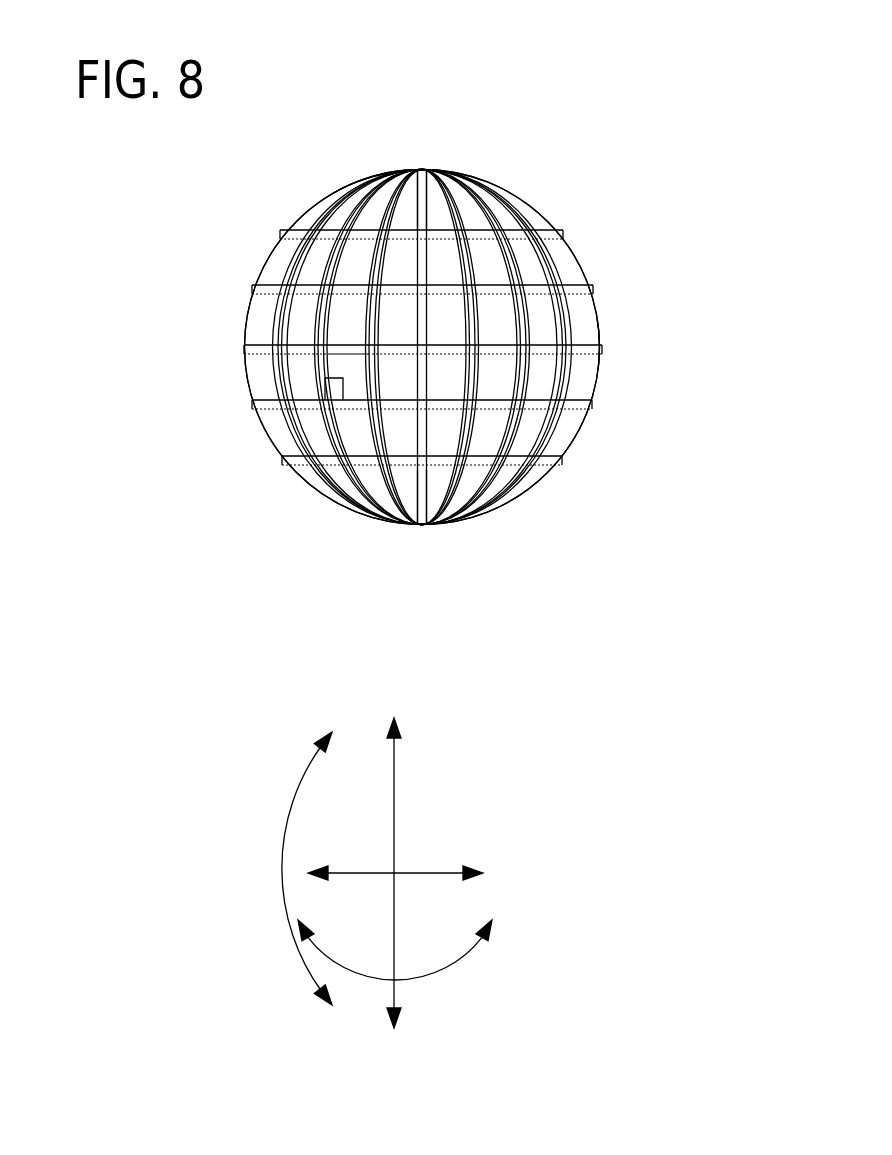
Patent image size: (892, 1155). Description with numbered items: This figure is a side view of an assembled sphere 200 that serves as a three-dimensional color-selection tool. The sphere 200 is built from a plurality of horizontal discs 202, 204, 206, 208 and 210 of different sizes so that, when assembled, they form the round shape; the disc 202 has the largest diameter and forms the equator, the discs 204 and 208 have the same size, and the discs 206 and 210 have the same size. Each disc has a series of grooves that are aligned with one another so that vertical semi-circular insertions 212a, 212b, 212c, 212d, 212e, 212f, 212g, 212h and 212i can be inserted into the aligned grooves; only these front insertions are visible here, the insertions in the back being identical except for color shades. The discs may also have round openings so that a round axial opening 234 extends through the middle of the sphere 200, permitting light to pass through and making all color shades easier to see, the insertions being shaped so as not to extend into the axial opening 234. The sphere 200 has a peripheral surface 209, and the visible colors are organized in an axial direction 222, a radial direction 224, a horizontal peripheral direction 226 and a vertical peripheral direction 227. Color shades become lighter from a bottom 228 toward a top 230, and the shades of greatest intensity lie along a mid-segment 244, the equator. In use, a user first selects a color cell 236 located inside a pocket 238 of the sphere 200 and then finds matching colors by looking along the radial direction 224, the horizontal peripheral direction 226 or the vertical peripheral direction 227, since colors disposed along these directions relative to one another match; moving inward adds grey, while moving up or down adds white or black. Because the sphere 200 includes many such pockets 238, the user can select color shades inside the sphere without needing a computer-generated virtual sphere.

The sphere 200 is at (556, 165).
The horizontal disc 202 is at (245, 345).
The horizontal disc 204 is at (256, 288).
The horizontal disc 206 is at (283, 232).
The horizontal disc 208 is at (253, 402).
The horizontal disc 210 is at (283, 456).
The peripheral surface 209 is at (393, 181).
The vertical semi-circular insertion 212a is at (424, 492).
The vertical semi-circular insertion 212b is at (392, 520).
The vertical semi-circular insertion 212c is at (348, 505).
The vertical semi-circular insertion 212d is at (325, 487).
The vertical semi-circular insertion 212e is at (298, 478).
The vertical semi-circular insertion 212f is at (462, 510).
The vertical semi-circular insertion 212g is at (500, 505).
The vertical semi-circular insertion 212h is at (523, 488).
The vertical semi-circular insertion 212i is at (583, 425).
The axial direction 222 is at (395, 777).
The radial direction 224 is at (435, 873).
The horizontal peripheral direction 226 is at (440, 966).
The vertical peripheral direction 227 is at (295, 795).
The bottom 228 is at (423, 490).
The top 230 is at (424, 170).
The axial opening 234 is at (415, 170).
The color cell 236 is at (334, 387).
The pocket 238 is at (349, 366).
The mid-segment 244 is at (602, 335).